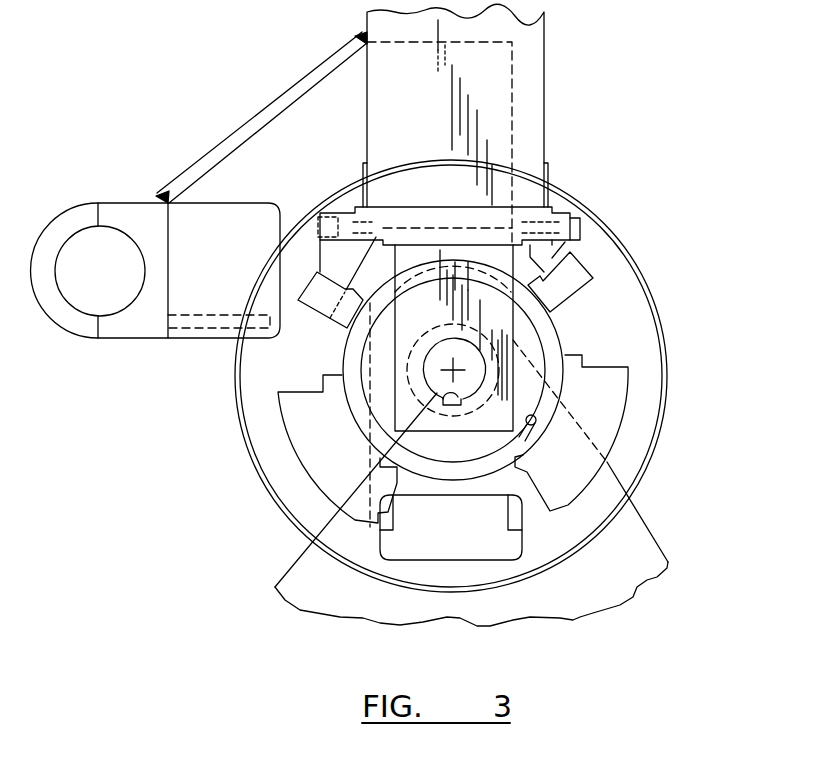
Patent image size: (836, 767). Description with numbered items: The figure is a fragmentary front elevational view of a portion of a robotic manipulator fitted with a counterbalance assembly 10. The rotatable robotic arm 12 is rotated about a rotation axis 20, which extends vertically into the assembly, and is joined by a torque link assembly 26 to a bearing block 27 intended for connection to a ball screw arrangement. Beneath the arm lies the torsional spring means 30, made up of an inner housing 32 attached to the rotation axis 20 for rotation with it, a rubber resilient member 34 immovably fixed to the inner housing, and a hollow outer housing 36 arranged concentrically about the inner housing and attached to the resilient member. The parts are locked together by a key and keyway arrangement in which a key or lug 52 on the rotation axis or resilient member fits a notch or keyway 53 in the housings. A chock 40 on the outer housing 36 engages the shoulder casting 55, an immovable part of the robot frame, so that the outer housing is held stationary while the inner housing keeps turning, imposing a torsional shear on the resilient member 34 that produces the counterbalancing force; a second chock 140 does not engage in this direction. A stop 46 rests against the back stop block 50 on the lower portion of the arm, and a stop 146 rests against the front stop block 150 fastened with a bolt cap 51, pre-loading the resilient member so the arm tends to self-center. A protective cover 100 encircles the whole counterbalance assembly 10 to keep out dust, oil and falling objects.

The counterbalance assembly 10 is at (645, 185).
The rotatable robotic arm 12 is at (531, 50).
The rotation axis 20 is at (445, 368).
The torque link assembly 26 is at (220, 192).
The bearing block 27 is at (130, 332).
The torsional spring means 30 is at (563, 318).
The inner housing 32 is at (497, 352).
The resilient member 34 is at (377, 413).
The outer housing 36 is at (557, 348).
The chock 40 is at (610, 403).
The stop 46 is at (328, 302).
The back stop block 50 is at (335, 255).
The bolt cap 51 is at (333, 218).
The key or lug 52 is at (465, 403).
The notch or keyway 53 is at (527, 420).
The shoulder casting 55 is at (423, 538).
The protective cover 100 is at (247, 423).
The chock 140 is at (338, 467).
The stop 146 is at (578, 273).
The front stop block 150 is at (558, 248).